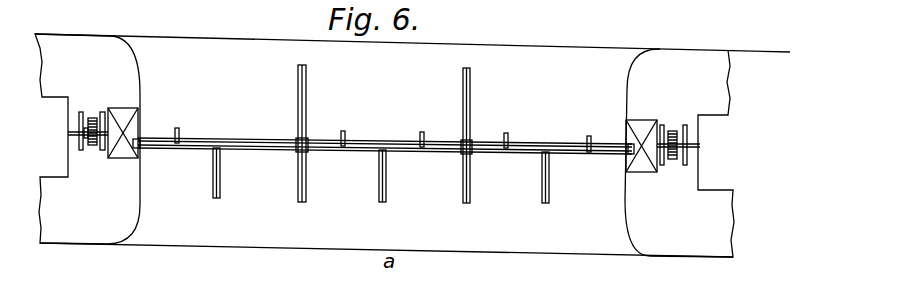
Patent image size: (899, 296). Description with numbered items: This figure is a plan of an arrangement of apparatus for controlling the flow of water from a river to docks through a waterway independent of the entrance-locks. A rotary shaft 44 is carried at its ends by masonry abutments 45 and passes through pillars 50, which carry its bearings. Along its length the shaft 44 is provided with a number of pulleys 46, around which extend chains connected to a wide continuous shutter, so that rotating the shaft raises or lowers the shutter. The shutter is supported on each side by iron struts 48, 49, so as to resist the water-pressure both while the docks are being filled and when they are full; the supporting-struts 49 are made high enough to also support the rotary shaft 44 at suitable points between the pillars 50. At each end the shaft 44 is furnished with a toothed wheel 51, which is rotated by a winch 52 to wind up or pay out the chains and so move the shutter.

The shaft 44 is at (367, 150).
The masonry abutments 45 is at (412, 145).
The pulleys 46 is at (178, 130).
The struts 48 is at (463, 178).
The supporting-struts 49 is at (298, 128).
The pillars 50 is at (128, 157).
The toothed wheels 51 is at (92, 150).
The winches 52 is at (70, 133).